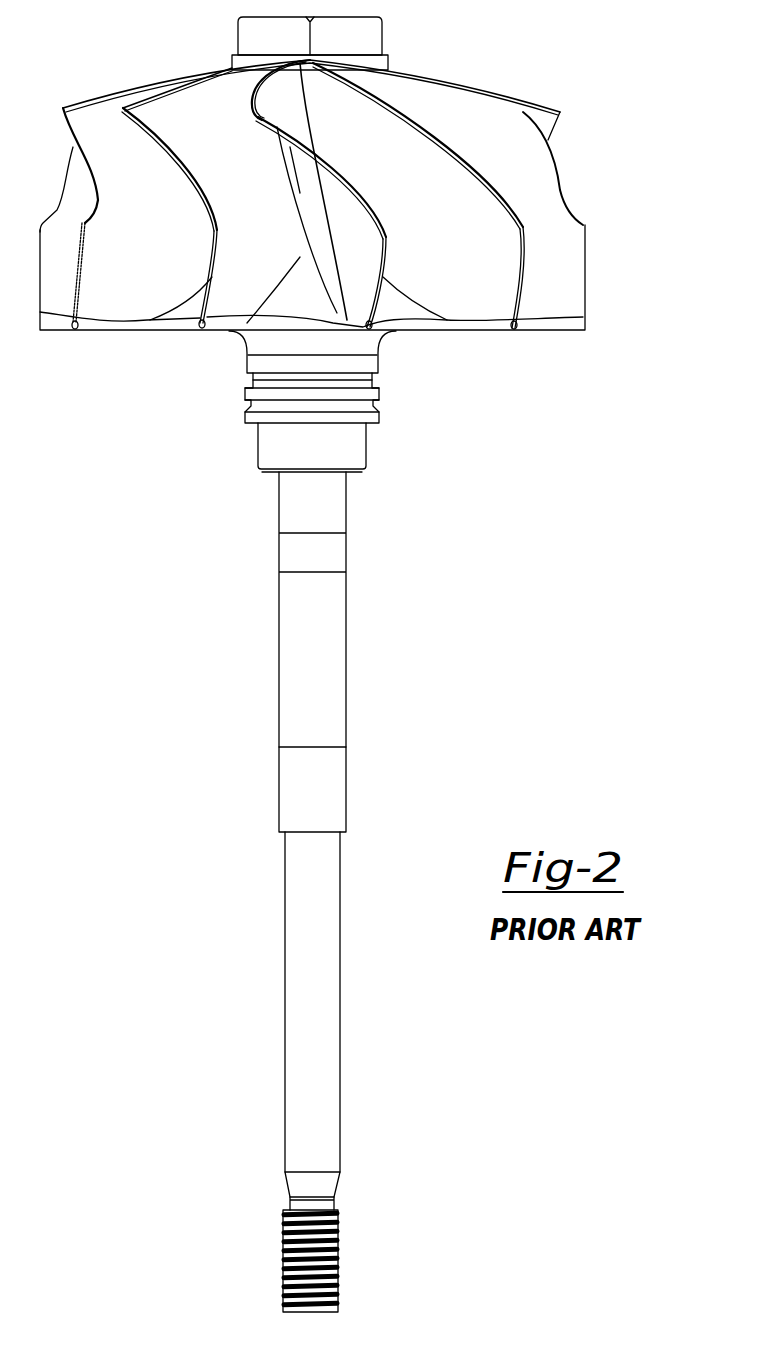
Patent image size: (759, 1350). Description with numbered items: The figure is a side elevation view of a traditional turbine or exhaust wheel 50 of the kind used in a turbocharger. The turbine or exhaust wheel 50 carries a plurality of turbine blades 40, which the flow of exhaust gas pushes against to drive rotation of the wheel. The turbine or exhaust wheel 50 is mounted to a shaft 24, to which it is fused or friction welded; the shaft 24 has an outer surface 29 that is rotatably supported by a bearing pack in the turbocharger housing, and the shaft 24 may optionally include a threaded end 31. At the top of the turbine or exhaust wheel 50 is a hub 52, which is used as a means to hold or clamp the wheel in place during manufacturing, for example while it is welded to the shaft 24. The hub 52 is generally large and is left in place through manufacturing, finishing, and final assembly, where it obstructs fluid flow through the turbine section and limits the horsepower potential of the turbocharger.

The shaft 24 is at (303, 642).
The outer surface 29 is at (300, 791).
The threaded end 31 is at (282, 1245).
The turbine blades 40 is at (233, 285).
The turbine or exhaust wheel 50 is at (586, 82).
The hub 52 is at (268, 33).